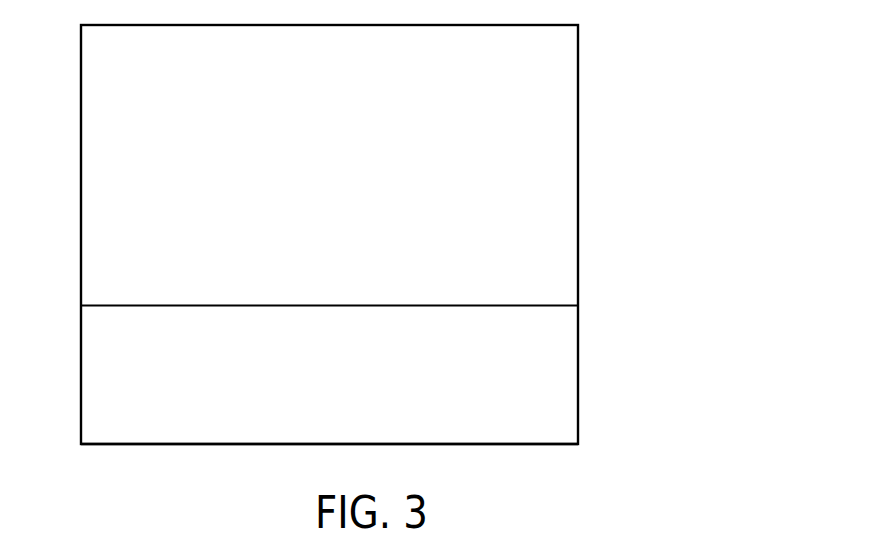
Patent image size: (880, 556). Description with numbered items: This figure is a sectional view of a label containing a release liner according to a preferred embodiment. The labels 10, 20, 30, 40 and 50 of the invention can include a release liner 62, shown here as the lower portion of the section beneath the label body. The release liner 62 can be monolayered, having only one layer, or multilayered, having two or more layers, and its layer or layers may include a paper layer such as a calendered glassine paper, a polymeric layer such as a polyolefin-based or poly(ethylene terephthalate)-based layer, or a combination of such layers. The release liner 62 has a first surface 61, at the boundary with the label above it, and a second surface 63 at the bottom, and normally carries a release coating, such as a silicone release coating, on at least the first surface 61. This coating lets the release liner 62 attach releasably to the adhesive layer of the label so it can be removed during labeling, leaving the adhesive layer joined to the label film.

The label 10 is at (456, 234).
The label 20 is at (456, 234).
The label 30 is at (456, 234).
The label 40 is at (456, 234).
The label 50 is at (578, 106).
The first surface 61 is at (141, 306).
The release liner 62 is at (578, 376).
The second surface 63 is at (107, 444).